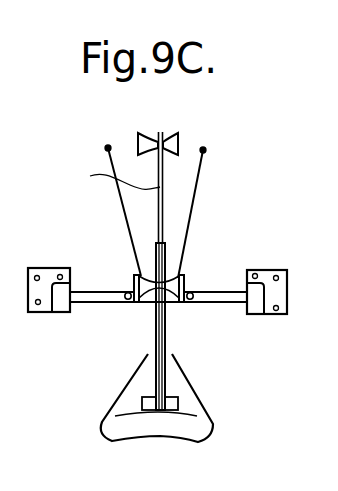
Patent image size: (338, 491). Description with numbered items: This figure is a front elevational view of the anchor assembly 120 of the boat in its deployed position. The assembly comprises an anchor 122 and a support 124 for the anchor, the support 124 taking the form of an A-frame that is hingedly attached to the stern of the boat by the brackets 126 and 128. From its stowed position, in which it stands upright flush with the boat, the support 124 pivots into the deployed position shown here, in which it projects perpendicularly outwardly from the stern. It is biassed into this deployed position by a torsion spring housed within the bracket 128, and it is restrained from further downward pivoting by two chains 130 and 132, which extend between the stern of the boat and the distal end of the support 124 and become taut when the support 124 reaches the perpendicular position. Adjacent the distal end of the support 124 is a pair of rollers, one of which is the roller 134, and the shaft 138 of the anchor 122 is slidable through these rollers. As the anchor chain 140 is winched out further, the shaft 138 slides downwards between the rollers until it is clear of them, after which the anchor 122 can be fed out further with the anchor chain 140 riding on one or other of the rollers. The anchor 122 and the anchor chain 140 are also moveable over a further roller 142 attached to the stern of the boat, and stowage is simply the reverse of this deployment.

The anchor assembly 120 is at (214, 156).
The anchor 122 is at (127, 389).
The support 124 is at (199, 289).
The bracket 126 is at (57, 313).
The bracket 128 is at (52, 268).
The chain 130 is at (125, 221).
The chain 132 is at (206, 174).
The roller 134 is at (184, 256).
The shaft 138 is at (155, 326).
The anchor chain 140 is at (107, 177).
The further roller 142 is at (177, 134).